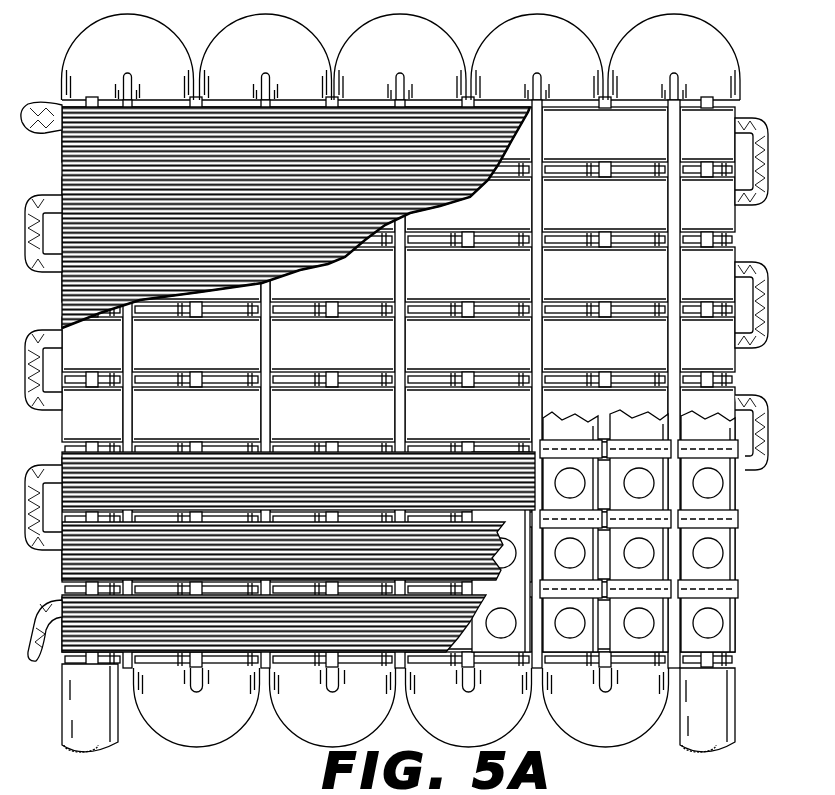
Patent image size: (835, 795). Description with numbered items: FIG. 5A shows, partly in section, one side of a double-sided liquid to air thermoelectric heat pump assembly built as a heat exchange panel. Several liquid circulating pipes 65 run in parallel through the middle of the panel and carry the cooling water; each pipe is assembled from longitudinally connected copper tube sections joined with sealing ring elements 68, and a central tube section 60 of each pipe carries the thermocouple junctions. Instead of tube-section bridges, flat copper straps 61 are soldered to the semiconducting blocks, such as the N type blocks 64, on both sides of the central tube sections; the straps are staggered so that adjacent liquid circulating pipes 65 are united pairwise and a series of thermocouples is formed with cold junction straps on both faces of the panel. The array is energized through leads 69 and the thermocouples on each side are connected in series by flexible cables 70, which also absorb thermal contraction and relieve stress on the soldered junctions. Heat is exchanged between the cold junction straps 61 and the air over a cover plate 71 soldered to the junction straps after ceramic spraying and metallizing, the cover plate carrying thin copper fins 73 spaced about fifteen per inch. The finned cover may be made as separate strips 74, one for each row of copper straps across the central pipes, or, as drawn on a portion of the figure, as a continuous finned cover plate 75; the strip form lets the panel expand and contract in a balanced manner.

The central tube section 60 is at (725, 615).
The copper strap 61 is at (640, 218).
The N type block 64 is at (705, 485).
The liquid circulating pipe 65 is at (725, 386).
The sealing ring element 68 is at (733, 520).
The lead 69 is at (36, 662).
The cable 70 is at (758, 182).
The cover plate 71 is at (327, 250).
The copper fin 73 is at (62, 181).
The finned cover strip 74 is at (192, 482).
The continuous finned cover plate 75 is at (363, 162).